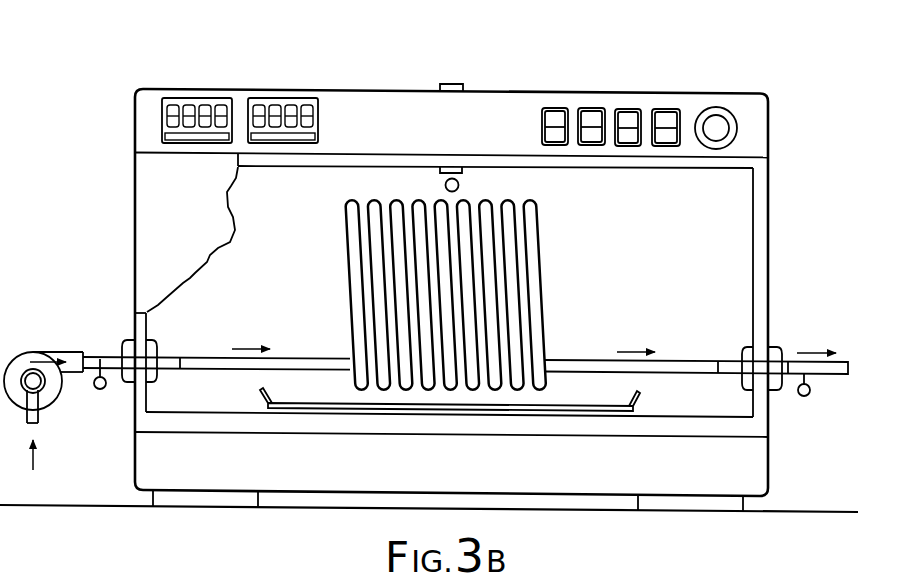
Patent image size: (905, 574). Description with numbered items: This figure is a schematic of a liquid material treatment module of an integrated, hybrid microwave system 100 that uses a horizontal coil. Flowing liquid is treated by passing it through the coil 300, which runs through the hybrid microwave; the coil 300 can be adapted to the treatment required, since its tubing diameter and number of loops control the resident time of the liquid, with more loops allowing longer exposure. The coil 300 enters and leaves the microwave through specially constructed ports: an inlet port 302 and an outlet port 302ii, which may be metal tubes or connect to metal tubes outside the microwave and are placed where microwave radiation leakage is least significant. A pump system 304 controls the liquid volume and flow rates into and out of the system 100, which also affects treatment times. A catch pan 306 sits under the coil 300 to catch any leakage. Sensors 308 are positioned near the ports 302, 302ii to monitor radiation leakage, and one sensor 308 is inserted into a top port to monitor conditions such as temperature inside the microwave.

The integrated, hybrid microwave system 100 is at (696, 74).
The coil 300 is at (543, 312).
The port 302 is at (123, 351).
The outlet port 302ii is at (777, 353).
The pump system 304 is at (28, 352).
The catch pan 306 is at (540, 404).
The sensor 308 is at (445, 181).